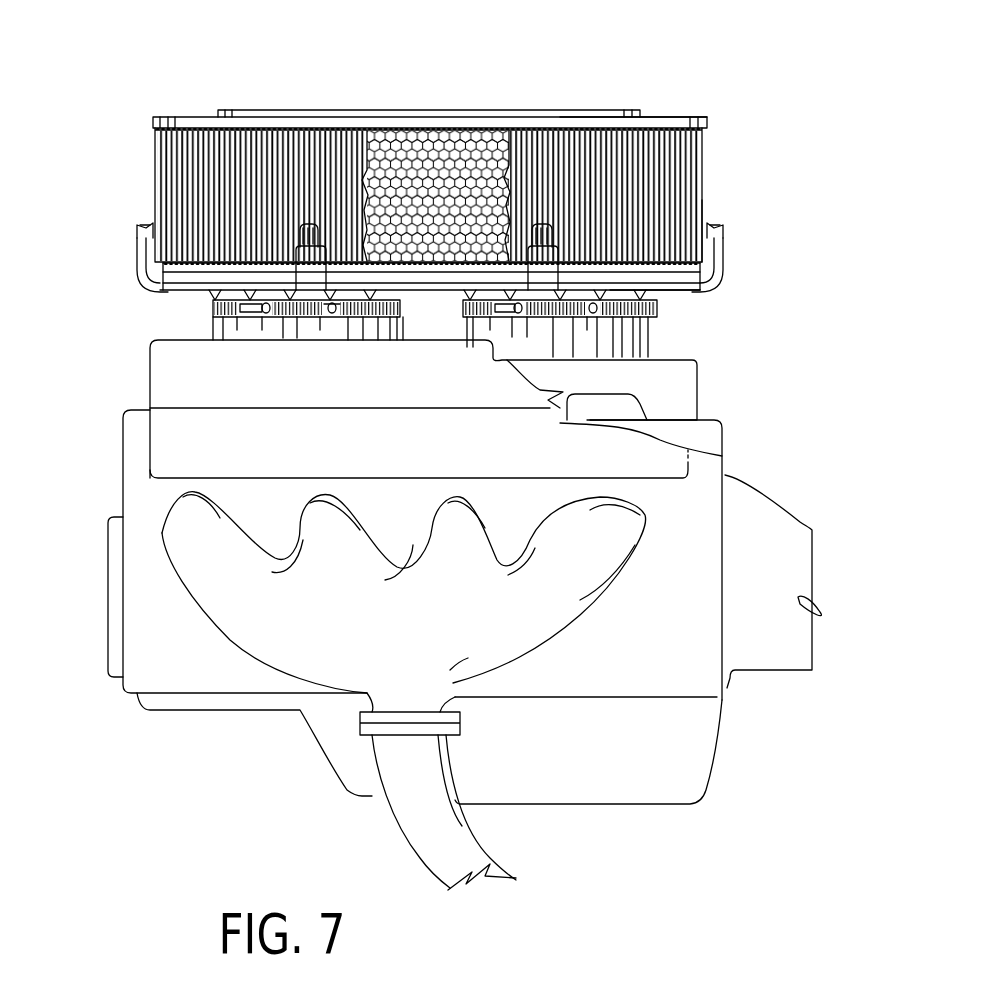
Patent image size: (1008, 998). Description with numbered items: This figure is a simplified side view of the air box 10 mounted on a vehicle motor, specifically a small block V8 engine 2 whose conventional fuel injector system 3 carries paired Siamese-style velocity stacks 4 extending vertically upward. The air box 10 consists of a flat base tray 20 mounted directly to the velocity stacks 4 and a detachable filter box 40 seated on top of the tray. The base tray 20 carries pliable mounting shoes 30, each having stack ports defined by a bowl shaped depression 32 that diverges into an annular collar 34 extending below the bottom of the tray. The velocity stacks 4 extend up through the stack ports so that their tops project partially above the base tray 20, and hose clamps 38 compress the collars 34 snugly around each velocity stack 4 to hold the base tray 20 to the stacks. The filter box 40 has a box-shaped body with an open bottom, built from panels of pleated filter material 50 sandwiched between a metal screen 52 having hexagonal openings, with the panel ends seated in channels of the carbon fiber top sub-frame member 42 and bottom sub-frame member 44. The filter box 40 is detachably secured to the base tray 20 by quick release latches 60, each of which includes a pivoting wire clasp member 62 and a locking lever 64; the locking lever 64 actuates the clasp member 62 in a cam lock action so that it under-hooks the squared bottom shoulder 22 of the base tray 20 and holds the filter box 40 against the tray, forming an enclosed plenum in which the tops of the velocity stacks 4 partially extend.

The engine 2 is at (464, 650).
The fuel injector system 3 is at (464, 409).
The velocity stacks 4 is at (404, 510).
The air box 10 is at (459, 245).
The base tray 20 is at (392, 299).
The bottom shoulder 22 is at (688, 312).
The mounting shoes 30 is at (428, 211).
The bowl shaped depression 32 is at (481, 292).
The annular collar 34 is at (445, 377).
The hose clamps 38 is at (451, 394).
The filter box 40 is at (430, 87).
The top sub-frame member 42 is at (633, 84).
The bottom sub-frame member 44 is at (758, 234).
The pleated filter material 50 is at (428, 159).
The metal screen 52 is at (436, 145).
The quick release latches 60 is at (436, 121).
The wire clasp member 62 is at (438, 182).
The locking lever 64 is at (446, 138).